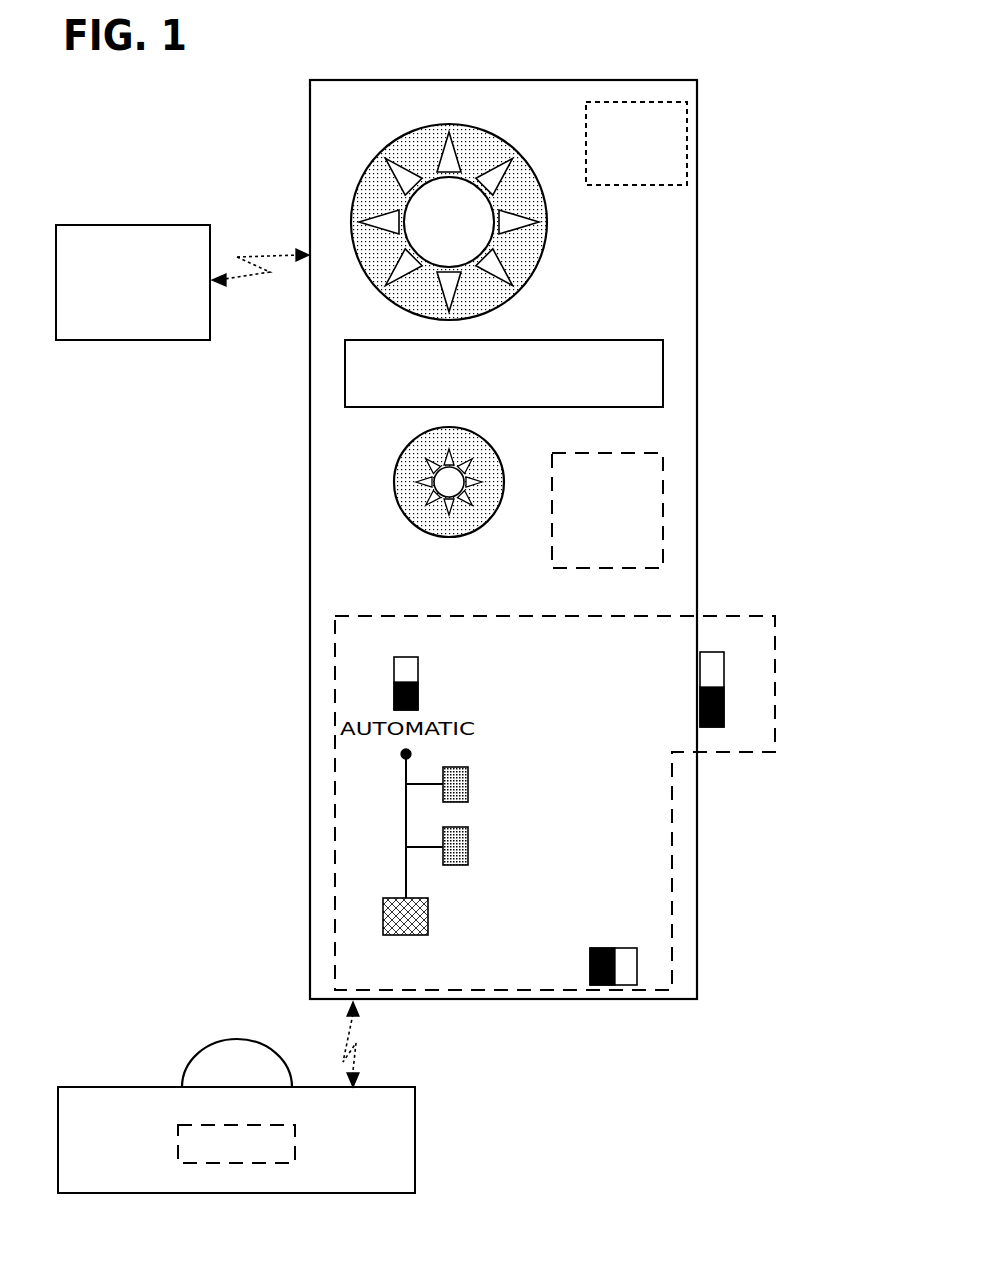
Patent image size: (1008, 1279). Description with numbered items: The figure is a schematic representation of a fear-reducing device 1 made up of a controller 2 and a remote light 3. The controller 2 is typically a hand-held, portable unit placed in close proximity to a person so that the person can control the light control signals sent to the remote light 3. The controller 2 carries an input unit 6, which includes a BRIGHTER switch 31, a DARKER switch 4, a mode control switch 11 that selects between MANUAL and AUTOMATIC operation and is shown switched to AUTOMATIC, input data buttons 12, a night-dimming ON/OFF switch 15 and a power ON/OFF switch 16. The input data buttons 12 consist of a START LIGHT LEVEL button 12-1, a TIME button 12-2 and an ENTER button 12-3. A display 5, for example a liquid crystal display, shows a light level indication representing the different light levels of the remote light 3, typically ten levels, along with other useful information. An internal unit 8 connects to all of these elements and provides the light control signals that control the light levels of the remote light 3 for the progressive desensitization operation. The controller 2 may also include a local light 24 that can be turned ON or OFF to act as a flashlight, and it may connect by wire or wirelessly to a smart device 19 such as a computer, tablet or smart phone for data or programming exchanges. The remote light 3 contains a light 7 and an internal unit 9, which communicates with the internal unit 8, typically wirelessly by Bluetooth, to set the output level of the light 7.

The fear-reducing device 1 is at (670, 1082).
The controller 2 is at (553, 80).
The remote light 3 is at (415, 1147).
The DARKER switch 4 is at (400, 478).
The display 5 is at (613, 340).
The input unit 6 is at (333, 835).
The light 7 is at (202, 1050).
The internal unit 8 is at (552, 512).
The internal unit 9 is at (297, 1152).
The mode control switch 11 is at (420, 682).
The input data buttons 12 is at (525, 829).
The START LIGHT LEVEL button 12-1 is at (463, 767).
The TIME button 12-2 is at (467, 827).
The ENTER button 12-3 is at (427, 908).
The night-dimming ON/OFF switch 15 is at (637, 955).
The power ON/OFF switch 16 is at (725, 687).
The smart device 19 is at (80, 225).
The local light 24 is at (632, 185).
The BRIGHTER switch 31 is at (355, 208).